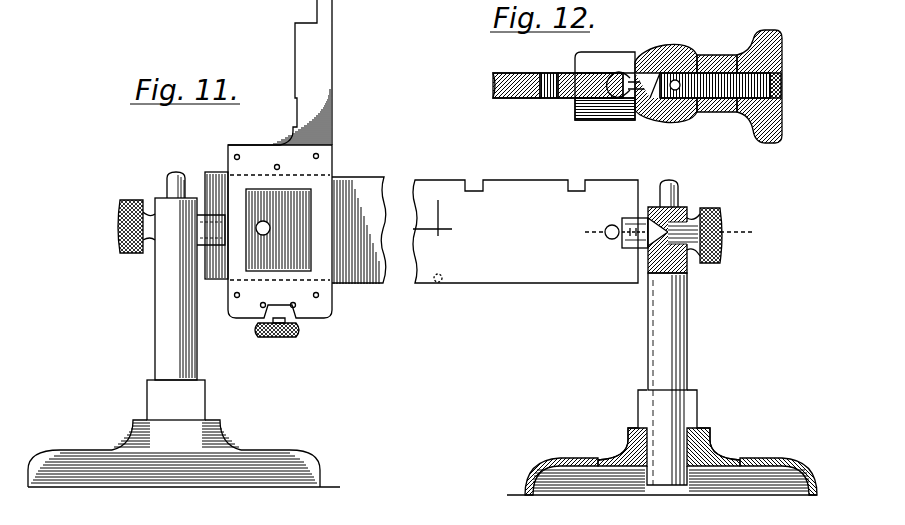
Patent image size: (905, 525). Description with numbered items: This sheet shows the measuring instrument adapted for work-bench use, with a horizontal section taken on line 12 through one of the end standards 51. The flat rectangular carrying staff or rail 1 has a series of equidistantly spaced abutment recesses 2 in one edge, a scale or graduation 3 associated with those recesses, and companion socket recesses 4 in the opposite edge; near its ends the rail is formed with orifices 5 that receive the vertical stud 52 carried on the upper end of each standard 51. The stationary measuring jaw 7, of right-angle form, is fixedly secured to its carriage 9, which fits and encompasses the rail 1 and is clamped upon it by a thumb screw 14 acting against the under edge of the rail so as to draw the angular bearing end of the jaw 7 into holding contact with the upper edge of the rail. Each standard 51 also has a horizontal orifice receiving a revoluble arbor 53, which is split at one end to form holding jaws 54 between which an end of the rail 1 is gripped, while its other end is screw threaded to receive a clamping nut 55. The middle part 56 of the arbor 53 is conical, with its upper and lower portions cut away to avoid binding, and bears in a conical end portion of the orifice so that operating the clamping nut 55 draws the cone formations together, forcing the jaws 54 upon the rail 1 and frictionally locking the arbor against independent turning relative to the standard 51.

In FIG. 11, the carrying staff or rail 1 is at (359, 230).
In FIG. 12, the carrying staff or rail 1 is at (500, 98).
In FIG. 11, the abutment recesses 2 is at (470, 182).
In FIG. 11, the scale or graduation 3 is at (448, 236).
In FIG. 11, the socket recesses 4 is at (438, 282).
In FIG. 11, the orifices 5 is at (270, 228).
In FIG. 12, the orifices 5 is at (550, 99).
In FIG. 11, the measuring jaw 7 is at (332, 63).
In FIG. 11, the carriage 9 is at (256, 148).
In FIG. 11, the section line 12 is at (671, 233).
In FIG. 11, the thumb screw 14 is at (300, 333).
In FIG. 11, the end standards 51 is at (702, 357).
In FIG. 12, the end standards 51 is at (672, 50).
In FIG. 11, the vertical stud 52 is at (174, 172).
In FIG. 11, the revoluble arbor 53 is at (209, 282).
In FIG. 12, the revoluble arbor 53 is at (668, 122).
In FIG. 11, the holding jaws 54 is at (630, 218).
In FIG. 12, the holding jaws 54 is at (600, 58).
In FIG. 11, the clamping nut 55 is at (116, 224).
In FIG. 12, the clamping nut 55 is at (760, 31).
In FIG. 11, the conical middle part 56 is at (636, 248).
In FIG. 12, the conical middle part 56 is at (641, 72).